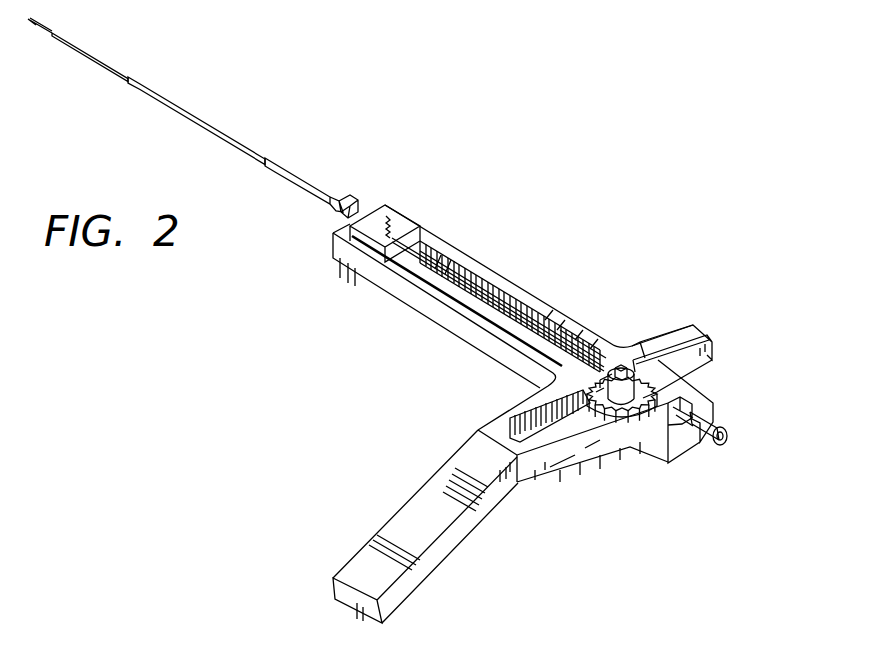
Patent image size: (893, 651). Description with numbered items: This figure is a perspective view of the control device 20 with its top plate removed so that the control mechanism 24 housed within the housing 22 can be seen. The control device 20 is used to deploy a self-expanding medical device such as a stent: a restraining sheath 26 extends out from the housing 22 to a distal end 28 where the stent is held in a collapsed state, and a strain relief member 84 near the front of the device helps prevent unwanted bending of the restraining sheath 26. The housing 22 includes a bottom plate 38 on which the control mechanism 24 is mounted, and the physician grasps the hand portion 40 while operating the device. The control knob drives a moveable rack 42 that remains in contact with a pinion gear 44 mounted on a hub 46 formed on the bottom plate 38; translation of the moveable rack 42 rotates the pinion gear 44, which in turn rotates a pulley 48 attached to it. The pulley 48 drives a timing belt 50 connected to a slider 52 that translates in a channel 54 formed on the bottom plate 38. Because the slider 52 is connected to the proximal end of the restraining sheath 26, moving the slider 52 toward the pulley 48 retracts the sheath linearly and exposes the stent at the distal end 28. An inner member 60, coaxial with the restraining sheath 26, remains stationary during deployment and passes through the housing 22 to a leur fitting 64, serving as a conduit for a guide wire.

The control device 20 is at (580, 258).
The housing 22 is at (502, 272).
The control mechanism 24 is at (725, 380).
The restraining sheath 26 is at (205, 121).
The distal end 28 is at (84, 50).
The bottom plate 38 is at (458, 532).
The hand portion 40 is at (353, 558).
The moveable rack 42 is at (518, 420).
The pinion gear 44 is at (641, 420).
The hub 46 is at (623, 366).
The pulley 48 is at (588, 407).
The timing belt 50 is at (441, 268).
The slider 52 is at (387, 232).
The channel 54 is at (433, 274).
The inner member 60 is at (483, 288).
The leur fitting 64 is at (714, 402).
The strain relief member 84 is at (291, 172).